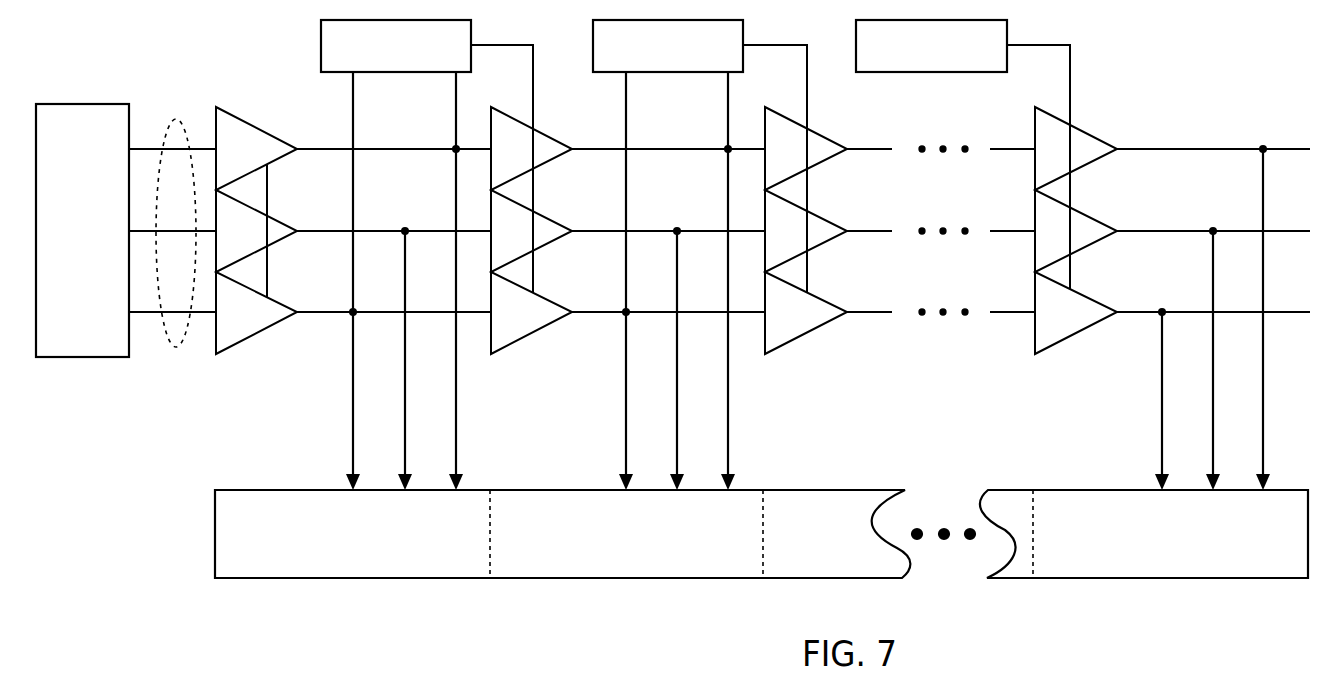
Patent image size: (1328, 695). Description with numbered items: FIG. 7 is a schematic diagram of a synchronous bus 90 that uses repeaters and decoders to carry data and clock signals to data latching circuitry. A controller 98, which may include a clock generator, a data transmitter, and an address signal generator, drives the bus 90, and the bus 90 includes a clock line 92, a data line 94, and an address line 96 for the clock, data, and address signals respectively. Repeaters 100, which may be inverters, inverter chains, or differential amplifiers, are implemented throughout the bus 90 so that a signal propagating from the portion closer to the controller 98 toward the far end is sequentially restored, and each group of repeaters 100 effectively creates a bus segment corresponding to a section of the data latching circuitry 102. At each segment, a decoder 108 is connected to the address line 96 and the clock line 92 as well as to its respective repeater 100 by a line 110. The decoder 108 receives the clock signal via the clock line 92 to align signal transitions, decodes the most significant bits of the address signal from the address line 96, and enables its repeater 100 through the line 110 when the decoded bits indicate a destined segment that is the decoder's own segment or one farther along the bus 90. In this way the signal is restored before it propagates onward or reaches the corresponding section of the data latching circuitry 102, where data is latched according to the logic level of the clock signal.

The synchronous bus 90 is at (176, 120).
The clock line 92 is at (349, 149).
The data line 94 is at (341, 230).
The address line 96 is at (338, 311).
The controller 98 is at (103, 104).
The repeaters 100 is at (258, 159).
The data latching circuitry 102 is at (243, 490).
The decoder 108 is at (664, 46).
The line 110 is at (535, 94).